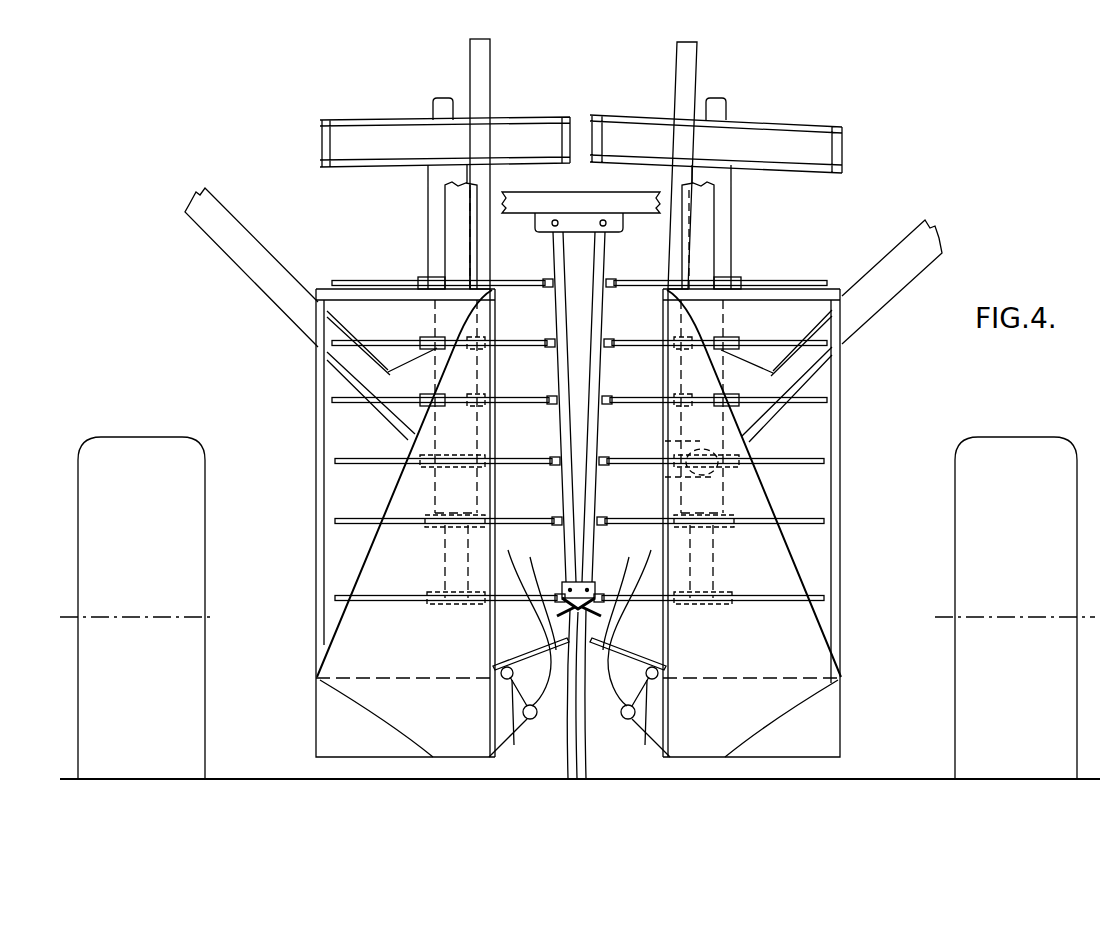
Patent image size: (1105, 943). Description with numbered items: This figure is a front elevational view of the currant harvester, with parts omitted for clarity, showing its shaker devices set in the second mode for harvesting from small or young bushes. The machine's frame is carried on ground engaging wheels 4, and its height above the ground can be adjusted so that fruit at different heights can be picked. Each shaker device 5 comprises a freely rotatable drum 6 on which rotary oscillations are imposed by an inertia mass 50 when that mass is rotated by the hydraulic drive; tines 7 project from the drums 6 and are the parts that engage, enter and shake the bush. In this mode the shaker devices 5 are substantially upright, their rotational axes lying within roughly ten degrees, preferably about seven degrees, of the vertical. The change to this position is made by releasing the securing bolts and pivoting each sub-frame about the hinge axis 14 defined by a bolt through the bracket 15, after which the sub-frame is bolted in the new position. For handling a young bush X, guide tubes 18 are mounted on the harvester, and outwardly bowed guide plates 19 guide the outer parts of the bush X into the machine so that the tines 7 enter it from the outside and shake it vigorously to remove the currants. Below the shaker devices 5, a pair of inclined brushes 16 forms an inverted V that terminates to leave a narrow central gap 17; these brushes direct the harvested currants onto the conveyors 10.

The ground engaging wheels 4 is at (146, 716).
The shaker device 5 is at (447, 335).
The drum 6 is at (432, 397).
The tines 7 is at (340, 597).
The conveyors 10 is at (330, 732).
The hinge axis 14 is at (717, 472).
The bracket 15 is at (692, 437).
The inclined brushes 16 is at (517, 660).
The central gap 17 is at (583, 623).
The guide tubes 18 is at (528, 720).
The guide plates 19 is at (345, 690).
The inertia mass 50 is at (375, 137).
The young bush X is at (573, 707).